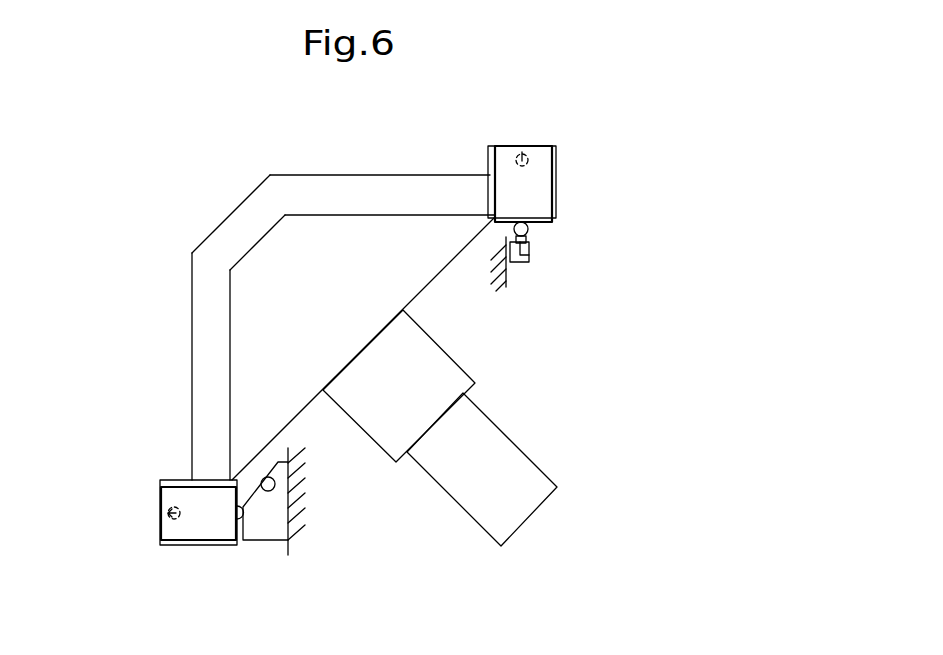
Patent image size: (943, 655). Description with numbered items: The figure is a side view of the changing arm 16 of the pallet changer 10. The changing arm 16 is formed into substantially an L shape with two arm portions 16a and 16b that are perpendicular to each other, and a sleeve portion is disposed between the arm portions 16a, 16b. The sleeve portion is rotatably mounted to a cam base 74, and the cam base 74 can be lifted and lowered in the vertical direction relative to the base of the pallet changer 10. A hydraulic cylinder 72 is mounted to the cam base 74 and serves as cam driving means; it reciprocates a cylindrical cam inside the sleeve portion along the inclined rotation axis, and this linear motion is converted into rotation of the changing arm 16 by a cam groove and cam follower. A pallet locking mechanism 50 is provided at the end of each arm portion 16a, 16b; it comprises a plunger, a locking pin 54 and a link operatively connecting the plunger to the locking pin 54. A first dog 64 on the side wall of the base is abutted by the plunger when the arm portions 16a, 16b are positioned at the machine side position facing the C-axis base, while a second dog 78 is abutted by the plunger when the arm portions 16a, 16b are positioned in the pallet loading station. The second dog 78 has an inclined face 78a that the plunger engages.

The pallet changer 10 is at (163, 196).
The changing arm 16 is at (287, 188).
The arm portion 16a is at (457, 187).
The arm portion 16b is at (207, 413).
The pallet locking mechanism 50 is at (580, 171).
The locking pin 54 is at (521, 145).
The first dog 64 is at (520, 262).
The hydraulic cylinder 72 is at (503, 455).
The cam base 74 is at (443, 373).
The second dog 78 is at (277, 508).
The inclined face 78a is at (263, 478).